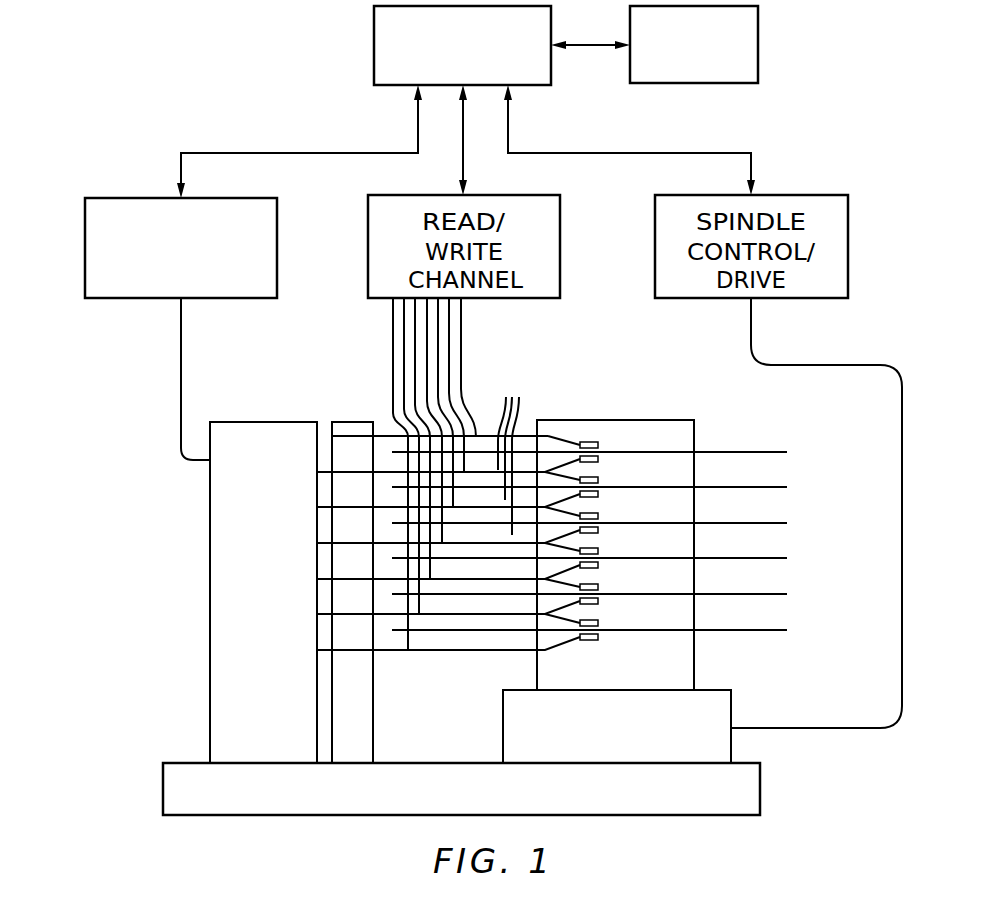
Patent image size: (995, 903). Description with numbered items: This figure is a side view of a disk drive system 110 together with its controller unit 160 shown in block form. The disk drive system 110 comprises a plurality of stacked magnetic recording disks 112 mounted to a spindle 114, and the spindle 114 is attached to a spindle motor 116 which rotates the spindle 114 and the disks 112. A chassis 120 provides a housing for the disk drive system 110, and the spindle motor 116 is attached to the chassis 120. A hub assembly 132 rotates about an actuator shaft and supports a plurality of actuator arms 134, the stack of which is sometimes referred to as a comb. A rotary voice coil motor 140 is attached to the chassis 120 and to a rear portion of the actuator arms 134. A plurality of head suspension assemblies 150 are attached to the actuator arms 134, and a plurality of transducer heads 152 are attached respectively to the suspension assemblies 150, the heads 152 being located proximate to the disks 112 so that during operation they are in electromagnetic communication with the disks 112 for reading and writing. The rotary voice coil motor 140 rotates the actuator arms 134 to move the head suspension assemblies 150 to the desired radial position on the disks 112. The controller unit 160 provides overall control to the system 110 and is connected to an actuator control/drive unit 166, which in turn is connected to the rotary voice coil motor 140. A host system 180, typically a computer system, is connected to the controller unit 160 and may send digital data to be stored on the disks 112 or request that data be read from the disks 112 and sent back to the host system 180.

The disk drive system 110 is at (163, 503).
The magnetic recording disks 112 is at (763, 454).
The spindle 114 is at (670, 420).
The spindle motor 116 is at (722, 705).
The chassis 120 is at (163, 782).
The hub assembly 132 is at (348, 425).
The actuator arms 134 is at (452, 690).
The rotary voice coil motor 140 is at (265, 426).
The head suspension assemblies 150 is at (560, 466).
The transducer heads 152 is at (599, 457).
The controller unit 160 is at (374, 49).
The actuator control/drive unit 166 is at (85, 287).
The host system 180 is at (758, 45).